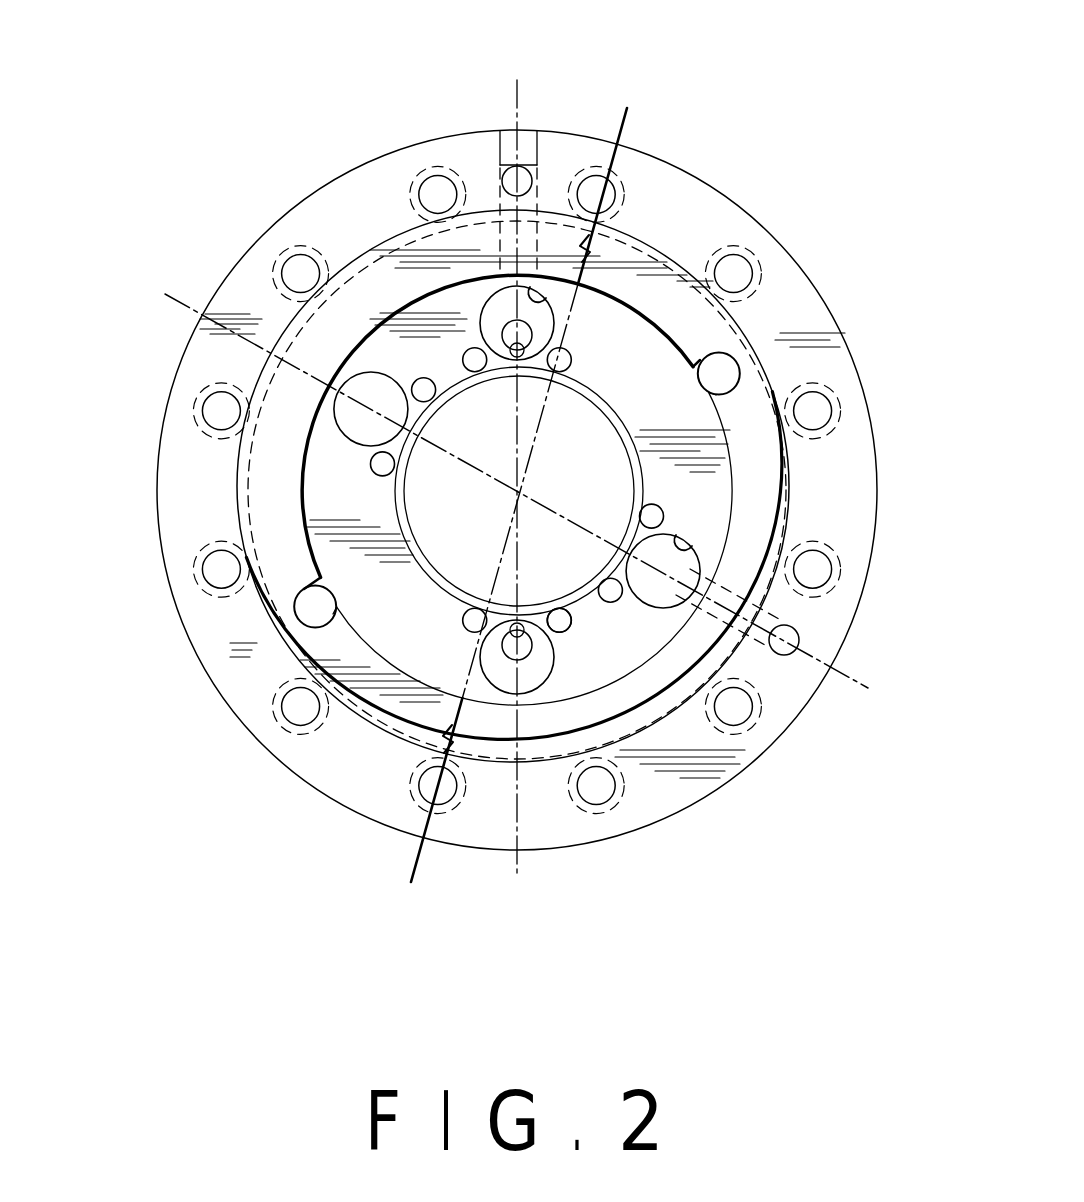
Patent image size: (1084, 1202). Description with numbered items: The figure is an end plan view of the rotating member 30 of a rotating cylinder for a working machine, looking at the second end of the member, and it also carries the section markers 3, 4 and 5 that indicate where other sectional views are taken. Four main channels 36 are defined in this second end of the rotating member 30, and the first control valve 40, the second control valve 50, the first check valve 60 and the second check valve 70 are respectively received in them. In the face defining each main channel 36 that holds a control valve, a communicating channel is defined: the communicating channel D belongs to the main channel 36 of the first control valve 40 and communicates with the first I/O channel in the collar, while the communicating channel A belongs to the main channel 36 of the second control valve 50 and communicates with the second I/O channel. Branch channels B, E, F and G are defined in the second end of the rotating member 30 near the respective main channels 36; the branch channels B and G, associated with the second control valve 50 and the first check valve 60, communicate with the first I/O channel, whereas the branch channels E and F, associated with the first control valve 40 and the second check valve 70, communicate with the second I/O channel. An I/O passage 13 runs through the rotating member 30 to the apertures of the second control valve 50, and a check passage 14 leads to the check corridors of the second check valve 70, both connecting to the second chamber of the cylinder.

The rotating member 30 is at (283, 808).
The first control valve 40 is at (544, 676).
The I/O passage 13 is at (500, 223).
The second control valve 50 is at (487, 303).
The main channels 36 is at (548, 303).
The communicating channel A is at (530, 337).
The branch channel B is at (566, 360).
The first check valve 60 is at (347, 415).
The branch channel G is at (380, 462).
The branch channel F is at (658, 519).
The check passage 14 is at (792, 605).
The second check valve 70 is at (690, 605).
The branch channel E is at (561, 626).
The communicating channel D is at (525, 650).
The section line 3- 3 is at (517, 78).
The section line 4- 4 is at (625, 113).
The section line 5- 5 is at (170, 298).